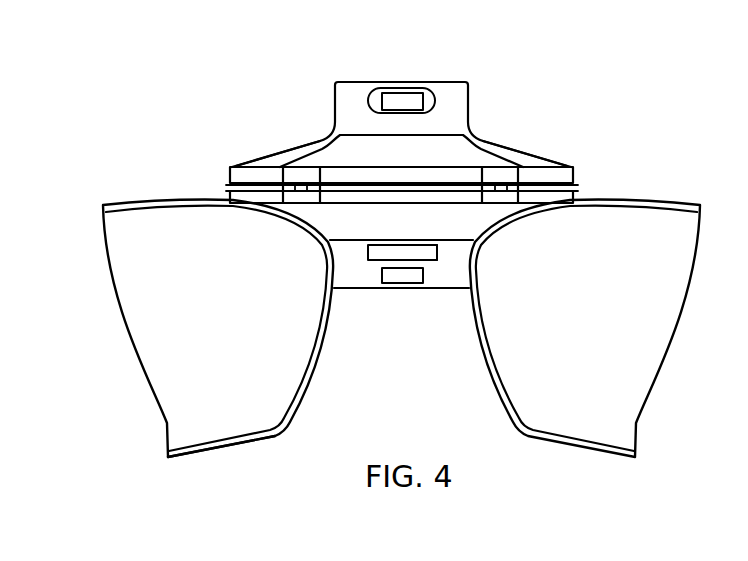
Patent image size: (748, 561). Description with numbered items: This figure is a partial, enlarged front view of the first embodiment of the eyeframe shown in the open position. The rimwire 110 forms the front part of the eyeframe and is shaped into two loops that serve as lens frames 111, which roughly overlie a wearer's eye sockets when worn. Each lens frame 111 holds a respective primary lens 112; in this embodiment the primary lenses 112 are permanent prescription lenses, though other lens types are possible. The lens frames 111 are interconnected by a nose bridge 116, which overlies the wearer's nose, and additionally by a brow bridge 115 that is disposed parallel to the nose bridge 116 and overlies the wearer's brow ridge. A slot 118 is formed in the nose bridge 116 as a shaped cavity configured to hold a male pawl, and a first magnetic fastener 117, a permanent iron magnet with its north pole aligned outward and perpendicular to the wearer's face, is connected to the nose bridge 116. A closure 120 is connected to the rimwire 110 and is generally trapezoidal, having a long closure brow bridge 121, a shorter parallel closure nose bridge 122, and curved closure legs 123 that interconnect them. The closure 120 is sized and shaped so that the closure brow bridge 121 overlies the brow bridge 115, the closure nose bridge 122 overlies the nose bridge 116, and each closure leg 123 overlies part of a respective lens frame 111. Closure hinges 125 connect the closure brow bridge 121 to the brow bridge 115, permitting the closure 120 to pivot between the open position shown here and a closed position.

The rimwire 110 is at (293, 443).
The lens frames 111 is at (316, 380).
The primary lenses 112 is at (235, 331).
The brow bridge 115 is at (407, 204).
The nose bridge 116 is at (417, 290).
The first magnetic fastener 117 is at (381, 284).
The slot 118 is at (439, 260).
The closure 120 is at (508, 136).
The closure brow bridge 121 is at (578, 183).
The closure nose bridge 122 is at (393, 88).
The closure legs 123 is at (297, 145).
The closure hinges 125 is at (230, 189).